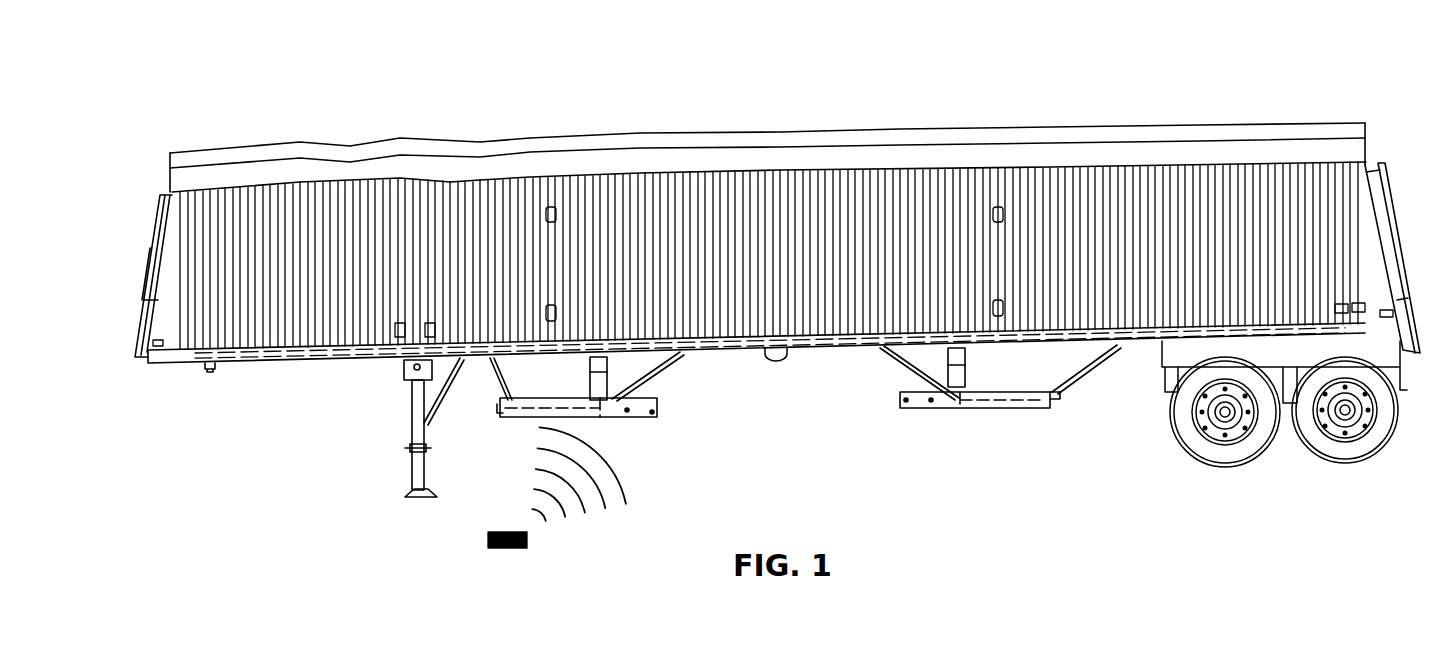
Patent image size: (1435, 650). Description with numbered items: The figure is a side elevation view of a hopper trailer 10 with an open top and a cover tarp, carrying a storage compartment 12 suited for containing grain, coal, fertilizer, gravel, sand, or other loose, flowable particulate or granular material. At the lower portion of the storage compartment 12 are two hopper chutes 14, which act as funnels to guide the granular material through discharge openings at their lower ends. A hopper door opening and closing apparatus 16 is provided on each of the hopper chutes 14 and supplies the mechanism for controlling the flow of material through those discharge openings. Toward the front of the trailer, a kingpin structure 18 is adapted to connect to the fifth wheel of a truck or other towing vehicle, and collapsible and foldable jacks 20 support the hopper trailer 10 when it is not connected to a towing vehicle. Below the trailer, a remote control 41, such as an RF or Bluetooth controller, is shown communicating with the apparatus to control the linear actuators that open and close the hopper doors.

The hopper trailer 10 is at (250, 96).
The storage compartment 12 is at (186, 209).
The hopper chutes 14 is at (647, 365).
The hopper door opening and closing apparatus 16 is at (626, 419).
The kingpin structure 18 is at (210, 374).
The collapsible and foldable jacks 20 is at (413, 461).
The remote control 41 is at (487, 539).